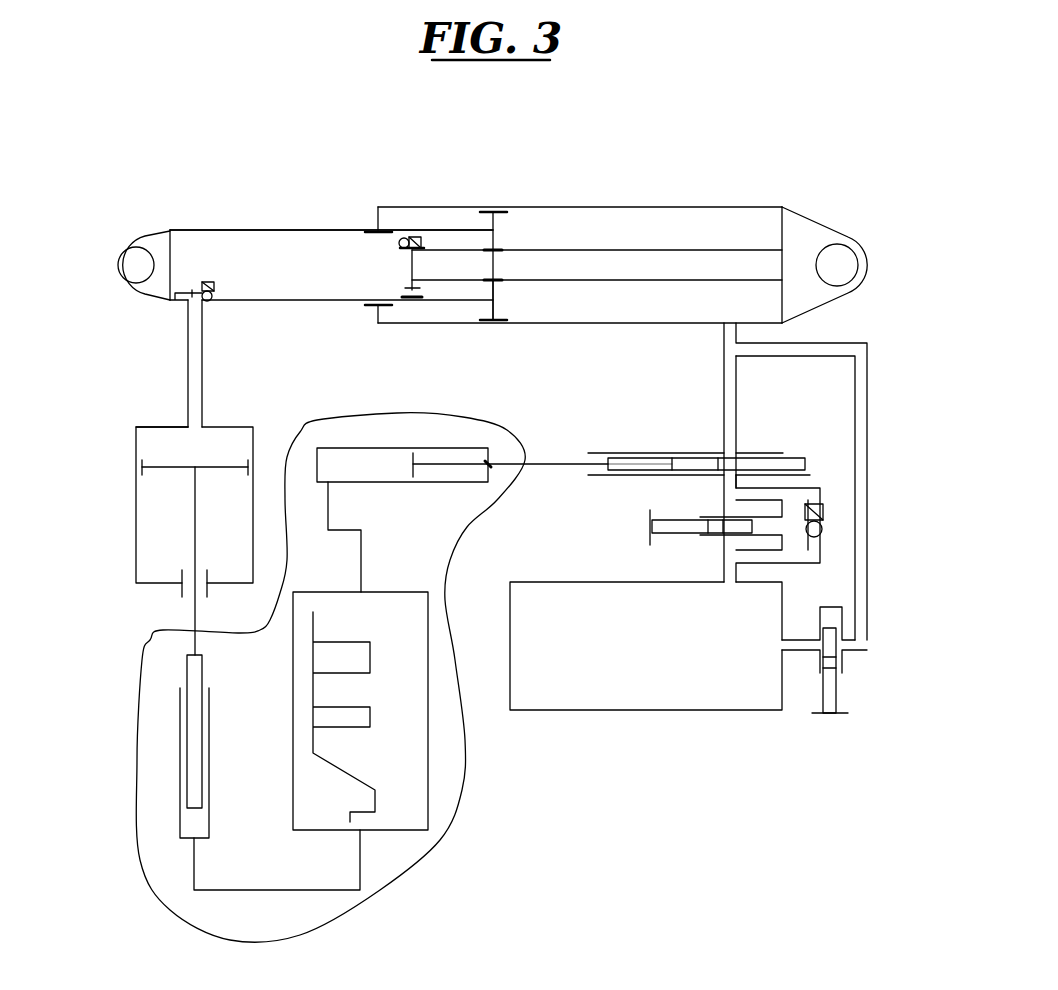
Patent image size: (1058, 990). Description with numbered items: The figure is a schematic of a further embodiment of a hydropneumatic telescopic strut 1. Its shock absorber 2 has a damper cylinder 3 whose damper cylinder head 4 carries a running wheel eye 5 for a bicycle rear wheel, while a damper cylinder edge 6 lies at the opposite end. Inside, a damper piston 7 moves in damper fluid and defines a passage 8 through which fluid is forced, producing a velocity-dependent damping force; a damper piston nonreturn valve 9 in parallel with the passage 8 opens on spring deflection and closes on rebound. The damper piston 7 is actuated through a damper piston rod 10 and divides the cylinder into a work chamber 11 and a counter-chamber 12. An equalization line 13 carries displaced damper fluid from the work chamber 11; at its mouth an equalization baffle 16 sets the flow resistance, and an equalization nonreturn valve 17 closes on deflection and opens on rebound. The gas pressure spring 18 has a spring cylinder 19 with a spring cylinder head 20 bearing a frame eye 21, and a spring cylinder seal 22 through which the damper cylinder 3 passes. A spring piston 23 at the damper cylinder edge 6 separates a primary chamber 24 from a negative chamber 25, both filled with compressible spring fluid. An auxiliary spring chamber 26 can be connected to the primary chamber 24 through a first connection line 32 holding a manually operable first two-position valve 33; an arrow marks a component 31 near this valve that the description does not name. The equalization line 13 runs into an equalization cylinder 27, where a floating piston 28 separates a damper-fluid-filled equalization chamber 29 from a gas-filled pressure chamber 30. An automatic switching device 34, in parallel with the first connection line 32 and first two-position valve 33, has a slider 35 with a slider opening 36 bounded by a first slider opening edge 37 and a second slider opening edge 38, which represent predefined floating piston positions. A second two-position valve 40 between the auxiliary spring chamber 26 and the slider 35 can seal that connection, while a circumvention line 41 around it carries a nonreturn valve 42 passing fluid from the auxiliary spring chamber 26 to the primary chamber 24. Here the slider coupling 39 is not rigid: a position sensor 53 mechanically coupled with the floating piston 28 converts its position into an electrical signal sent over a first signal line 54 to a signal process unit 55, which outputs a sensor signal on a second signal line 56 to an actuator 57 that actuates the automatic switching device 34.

The hydropneumatic telescopic strut 1 is at (113, 740).
The shock absorber 2 is at (303, 200).
The damper cylinder 3 is at (207, 229).
The damper cylinder head 4 is at (170, 228).
The running wheel eye 5 is at (115, 265).
The damper cylinder edge 6 is at (493, 222).
The damper piston 7 is at (412, 268).
The passage 8 is at (420, 299).
The damper piston nonreturn valve 9 is at (412, 236).
The damper piston rod 10 is at (590, 250).
The work chamber 11 is at (303, 269).
The counter-chamber 12 is at (500, 296).
The equalization line 13 is at (203, 375).
The equalization baffle 16 is at (185, 293).
The equalization nonreturn valve 17 is at (214, 290).
The gas pressure spring 18 is at (697, 196).
The spring cylinder 19 is at (638, 207).
The spring cylinder head 20 is at (790, 207).
The frame eye 21 is at (868, 262).
The spring cylinder seal 22 is at (368, 228).
The spring piston 23 is at (497, 214).
The primary chamber 24 is at (630, 319).
The negative chamber 25 is at (460, 310).
The auxiliary spring chamber 26 is at (620, 654).
The equalization cylinder 27 is at (136, 500).
The floating piston 28 is at (160, 467).
The equalization chamber 29 is at (205, 462).
The pressure chamber 30 is at (207, 544).
The valve unit 31 is at (856, 662).
The first connection line 32 is at (867, 498).
The first two-position valve 33 is at (822, 694).
The automatic switching device 34 is at (704, 428).
The slider 35 is at (790, 458).
The slider opening 36 is at (685, 470).
The first slider opening edge 37 is at (680, 460).
The second slider opening edge 38 is at (712, 470).
The slider coupling 39 is at (465, 790).
The second two-position valve 40 is at (655, 530).
The circumvention line 41 is at (790, 563).
The nonreturn valve 42 is at (823, 504).
The position sensor 53 is at (210, 708).
The first signal line 54 is at (240, 890).
The signal process unit 55 is at (385, 771).
The second signal line 56 is at (362, 560).
The actuator 57 is at (400, 483).